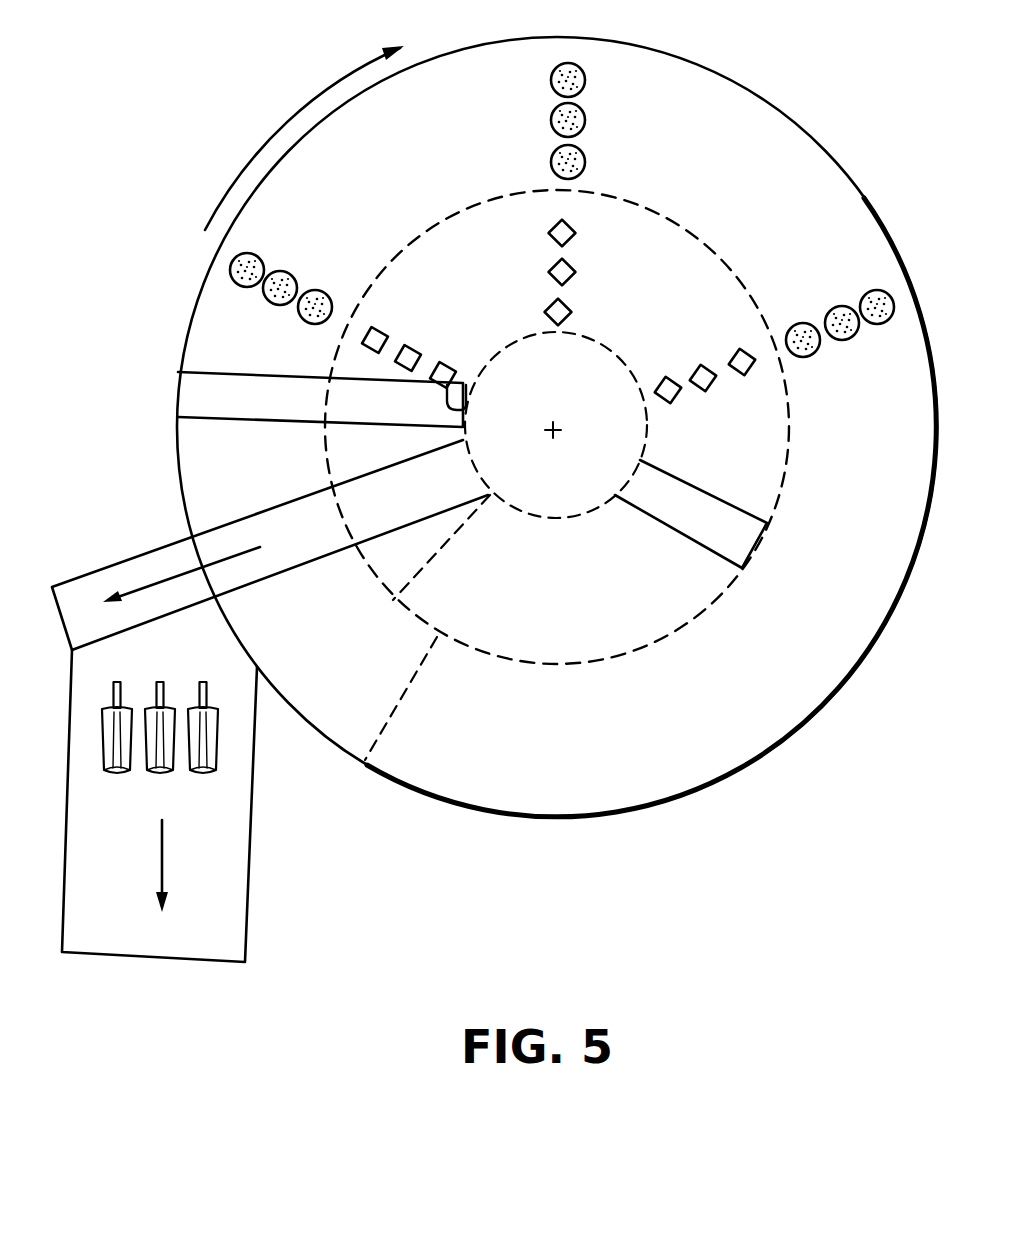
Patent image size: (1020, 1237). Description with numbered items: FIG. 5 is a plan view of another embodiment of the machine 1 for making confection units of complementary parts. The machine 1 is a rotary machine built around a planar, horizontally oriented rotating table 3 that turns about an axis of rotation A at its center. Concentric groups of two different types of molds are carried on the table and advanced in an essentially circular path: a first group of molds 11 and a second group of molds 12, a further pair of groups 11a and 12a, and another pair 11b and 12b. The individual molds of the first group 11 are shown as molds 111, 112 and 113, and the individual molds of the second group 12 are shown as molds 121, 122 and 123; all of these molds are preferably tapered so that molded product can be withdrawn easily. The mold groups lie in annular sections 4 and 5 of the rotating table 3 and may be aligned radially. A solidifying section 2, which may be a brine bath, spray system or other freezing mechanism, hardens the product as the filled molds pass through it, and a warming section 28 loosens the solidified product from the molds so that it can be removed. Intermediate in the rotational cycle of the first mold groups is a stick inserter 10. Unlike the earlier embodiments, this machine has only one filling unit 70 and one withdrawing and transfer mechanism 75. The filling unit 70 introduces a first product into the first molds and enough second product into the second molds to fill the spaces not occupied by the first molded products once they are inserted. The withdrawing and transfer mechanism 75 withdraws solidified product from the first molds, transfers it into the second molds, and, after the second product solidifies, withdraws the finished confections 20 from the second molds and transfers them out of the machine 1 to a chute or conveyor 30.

The machine 1 is at (186, 258).
The solidifying section 2 is at (528, 235).
The rotating table 3 is at (867, 201).
The annular section 4 is at (546, 624).
The annular section 5 is at (576, 751).
The stick inserter 10 is at (669, 521).
The group of first molds 11 is at (444, 340).
The group of first molds 11a is at (584, 213).
The group of first molds 11b is at (711, 408).
The group of second molds 12 is at (282, 283).
The group of second molds 12a is at (597, 60).
The group of second molds 12b is at (846, 348).
The confections 20 is at (227, 782).
The warming section 28 is at (321, 658).
The chute or conveyor 30 is at (168, 860).
The filling unit 70 is at (297, 411).
The withdrawing and transfer mechanism 75 is at (370, 518).
The first mold 111 is at (345, 326).
The first mold 112 is at (401, 364).
The first mold 113 is at (470, 400).
The second mold 121 is at (258, 256).
The second mold 122 is at (292, 273).
The second mold 123 is at (330, 290).
The axis of rotation A is at (553, 432).